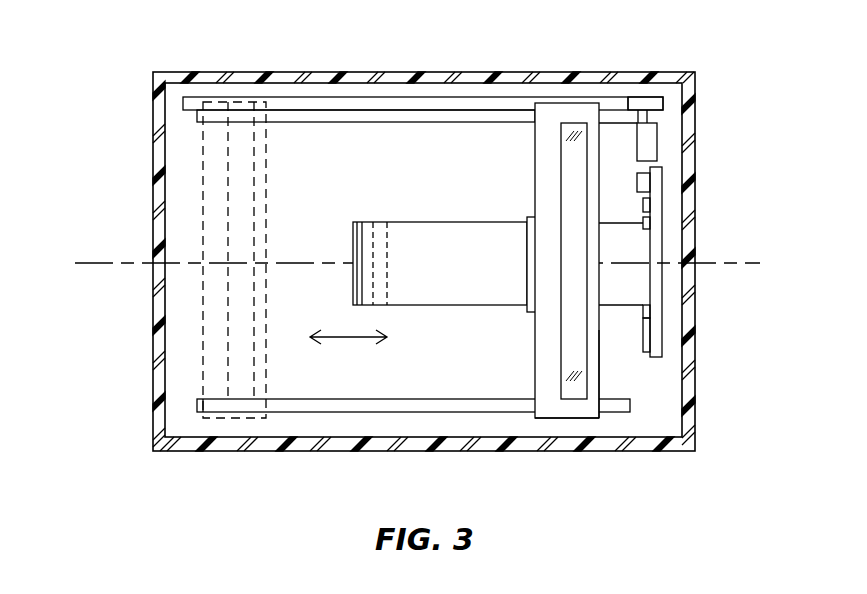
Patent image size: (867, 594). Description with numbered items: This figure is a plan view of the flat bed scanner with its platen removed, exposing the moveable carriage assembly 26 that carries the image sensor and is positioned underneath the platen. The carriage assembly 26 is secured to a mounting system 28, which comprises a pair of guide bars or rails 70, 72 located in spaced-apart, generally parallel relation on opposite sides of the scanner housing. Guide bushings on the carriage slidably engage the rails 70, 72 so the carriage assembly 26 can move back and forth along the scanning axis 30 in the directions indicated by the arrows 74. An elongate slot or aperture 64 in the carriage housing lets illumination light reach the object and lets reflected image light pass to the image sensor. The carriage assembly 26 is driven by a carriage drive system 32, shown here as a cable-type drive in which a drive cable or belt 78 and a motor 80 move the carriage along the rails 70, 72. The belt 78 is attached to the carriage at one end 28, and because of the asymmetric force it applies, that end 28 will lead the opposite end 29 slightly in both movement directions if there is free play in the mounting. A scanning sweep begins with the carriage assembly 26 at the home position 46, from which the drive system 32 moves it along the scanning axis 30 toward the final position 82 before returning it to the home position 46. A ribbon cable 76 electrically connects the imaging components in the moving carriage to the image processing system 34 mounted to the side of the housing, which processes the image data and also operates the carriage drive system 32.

The moveable carriage assembly 26 is at (600, 380).
The mounting system 28 is at (600, 265).
The opposite end 29 is at (562, 418).
The scanning axis 30 is at (95, 263).
The carriage drive system 32 is at (689, 142).
The image processing system 34 is at (626, 329).
The home position 46 is at (535, 366).
The aperture 64 is at (561, 331).
The guide bar 70 is at (393, 123).
The guide bar 72 is at (432, 399).
The arrows 74 is at (349, 338).
The ribbon cable 76 is at (353, 242).
The drive cable 78 is at (289, 97).
The motor 80 is at (657, 152).
The final position 82 is at (268, 171).